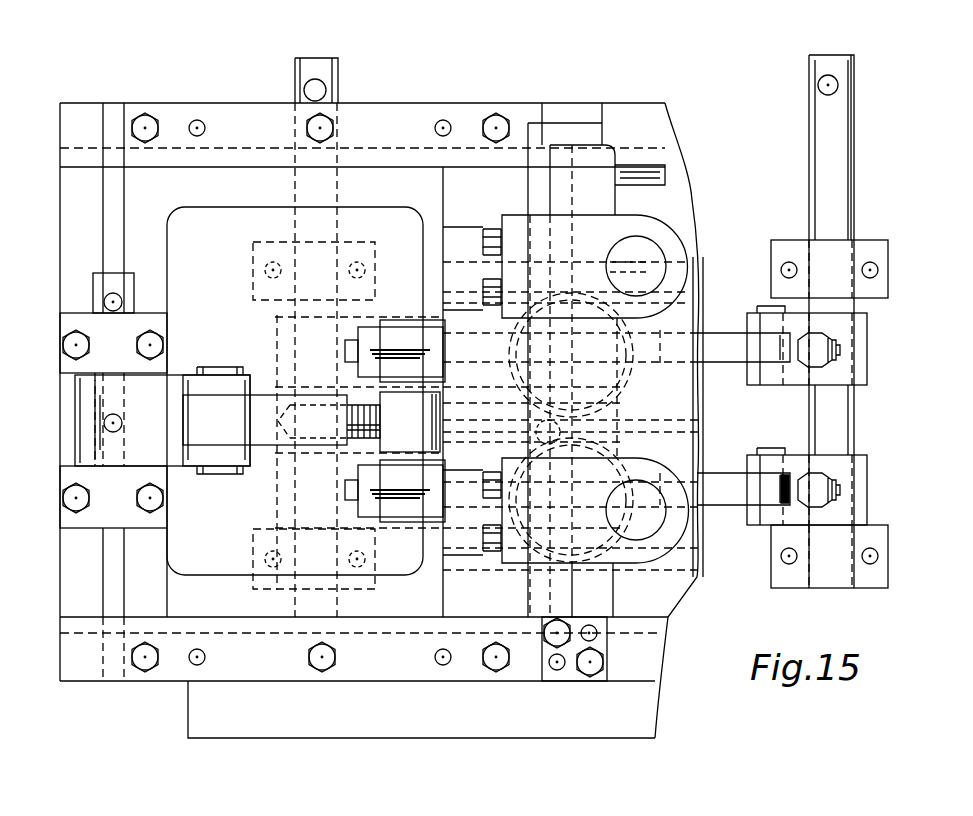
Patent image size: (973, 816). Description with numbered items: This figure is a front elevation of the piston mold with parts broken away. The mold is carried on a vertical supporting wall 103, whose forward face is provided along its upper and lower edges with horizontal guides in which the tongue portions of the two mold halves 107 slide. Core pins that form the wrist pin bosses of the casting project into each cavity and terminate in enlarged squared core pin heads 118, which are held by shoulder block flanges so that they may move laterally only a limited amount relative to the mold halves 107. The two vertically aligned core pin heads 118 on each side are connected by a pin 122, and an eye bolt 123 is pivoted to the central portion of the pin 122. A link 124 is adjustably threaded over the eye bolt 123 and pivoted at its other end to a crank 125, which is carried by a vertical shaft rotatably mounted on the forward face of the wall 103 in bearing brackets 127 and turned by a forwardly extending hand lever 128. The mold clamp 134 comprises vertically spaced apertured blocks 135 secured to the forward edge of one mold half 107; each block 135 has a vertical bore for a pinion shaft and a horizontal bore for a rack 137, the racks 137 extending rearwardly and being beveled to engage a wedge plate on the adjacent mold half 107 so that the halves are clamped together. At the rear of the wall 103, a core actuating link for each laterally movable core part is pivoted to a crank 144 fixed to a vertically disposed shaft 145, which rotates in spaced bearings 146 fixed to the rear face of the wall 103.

The vertical supporting wall 103 is at (203, 224).
The mold half 107 is at (608, 600).
The core pin head 118 is at (380, 437).
The pin 122 is at (408, 462).
The eye bolt 123 is at (374, 402).
The link 124 is at (250, 425).
The crank 125 is at (145, 445).
The bearing bracket 127 is at (70, 366).
The hand lever 128 is at (110, 300).
The mold clamp 134 is at (508, 222).
The apertured block 135 is at (588, 222).
The rack 137 is at (650, 250).
The crank 144 is at (868, 351).
The shaft 145 is at (848, 427).
The bearing 146 is at (880, 254).